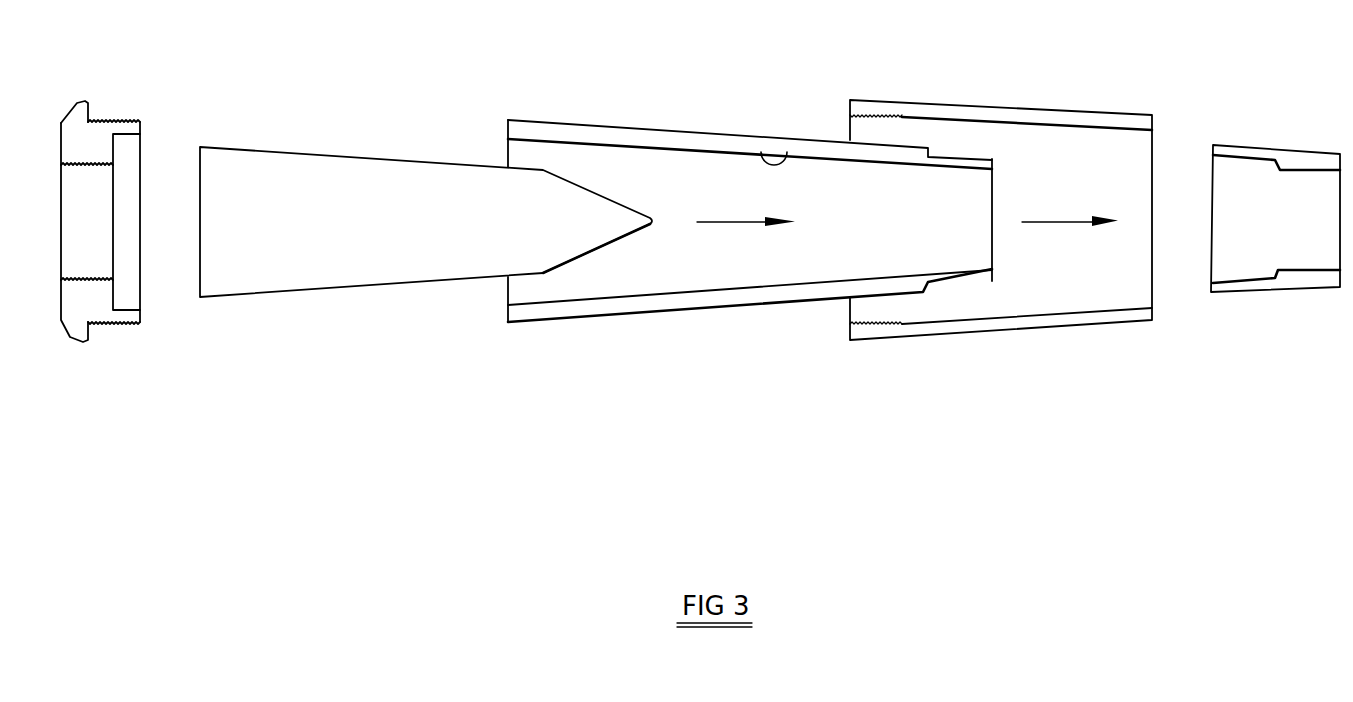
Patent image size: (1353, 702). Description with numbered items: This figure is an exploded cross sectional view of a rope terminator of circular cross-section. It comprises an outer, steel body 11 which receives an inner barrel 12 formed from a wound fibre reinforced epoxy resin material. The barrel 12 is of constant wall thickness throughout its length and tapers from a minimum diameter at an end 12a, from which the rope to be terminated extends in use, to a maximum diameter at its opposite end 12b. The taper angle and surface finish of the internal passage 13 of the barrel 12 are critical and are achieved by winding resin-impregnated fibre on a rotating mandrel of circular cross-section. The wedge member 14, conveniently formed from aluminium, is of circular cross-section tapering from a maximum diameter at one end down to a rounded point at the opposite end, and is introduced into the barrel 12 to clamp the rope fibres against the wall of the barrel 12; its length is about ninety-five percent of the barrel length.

The outer steel body 11 is at (1017, 103).
The inner barrel 12 is at (672, 130).
The end of barrel 12a is at (990, 193).
The opposite end of barrel 12b is at (508, 152).
The internal passage 13 is at (792, 152).
The wedge member 14 is at (365, 202).